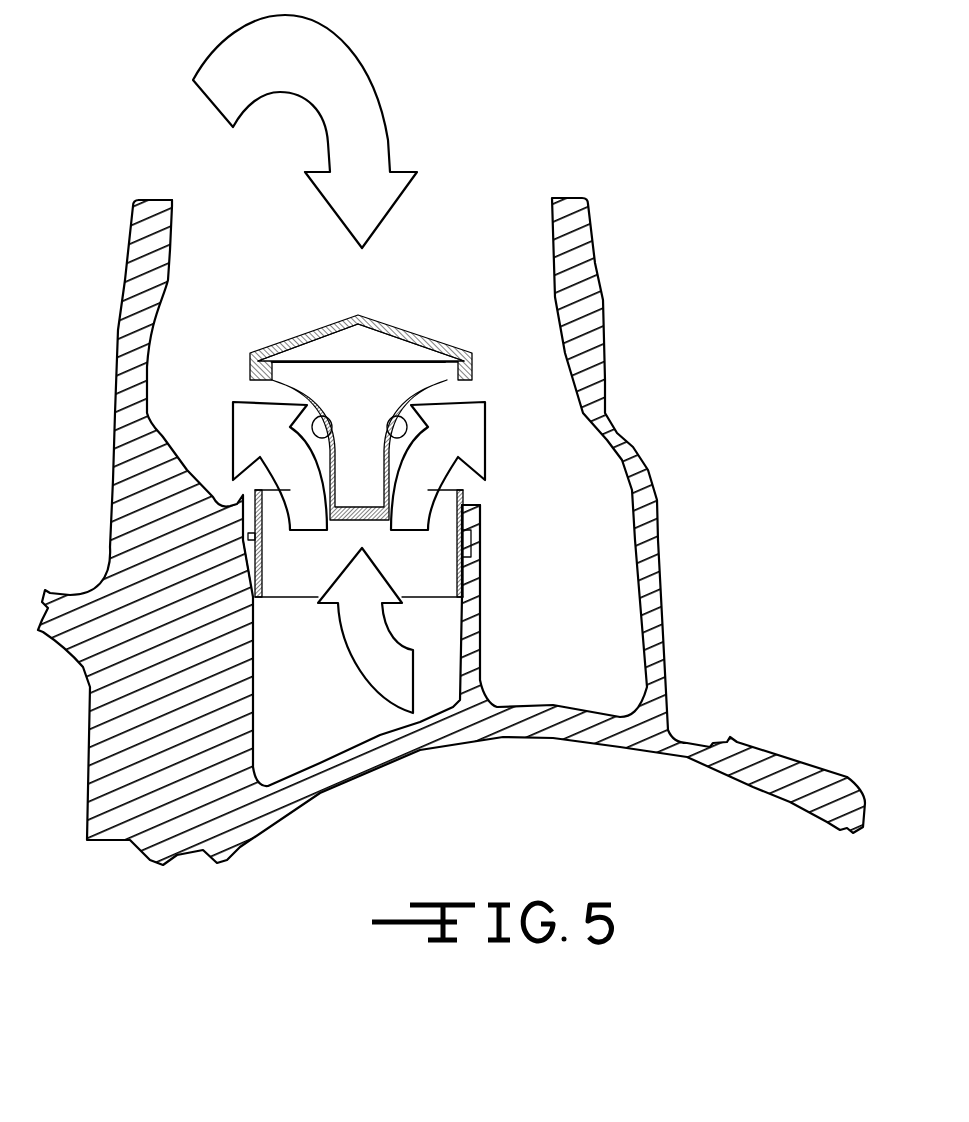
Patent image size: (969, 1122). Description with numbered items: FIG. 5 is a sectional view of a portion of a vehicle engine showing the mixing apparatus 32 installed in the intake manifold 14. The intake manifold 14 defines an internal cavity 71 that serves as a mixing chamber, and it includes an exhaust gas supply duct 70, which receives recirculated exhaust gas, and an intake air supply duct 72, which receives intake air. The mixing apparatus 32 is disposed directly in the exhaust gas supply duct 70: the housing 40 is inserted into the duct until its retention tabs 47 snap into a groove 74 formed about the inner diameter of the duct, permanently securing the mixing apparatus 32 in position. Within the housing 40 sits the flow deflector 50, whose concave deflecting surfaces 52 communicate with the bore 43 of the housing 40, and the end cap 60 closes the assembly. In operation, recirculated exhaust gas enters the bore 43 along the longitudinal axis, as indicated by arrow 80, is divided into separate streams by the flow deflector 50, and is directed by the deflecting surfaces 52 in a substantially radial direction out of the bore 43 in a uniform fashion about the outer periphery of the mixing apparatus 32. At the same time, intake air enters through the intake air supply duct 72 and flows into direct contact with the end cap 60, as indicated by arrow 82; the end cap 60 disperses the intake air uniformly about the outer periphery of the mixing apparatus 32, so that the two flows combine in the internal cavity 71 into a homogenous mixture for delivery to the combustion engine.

The intake manifold 14 is at (143, 255).
The intake air supply duct 72 is at (172, 217).
The internal cavity 71 is at (220, 282).
The arrow 82 is at (353, 108).
The end cap 60 is at (323, 327).
The mixing apparatus 32 is at (395, 308).
The flow deflector 50 is at (428, 372).
The deflecting surfaces 52 is at (388, 415).
The housing 40 is at (433, 558).
The bore 43 is at (430, 598).
The retention tabs 47 is at (250, 538).
The groove 74 is at (250, 555).
The exhaust gas supply duct 70 is at (466, 504).
The arrow 80 is at (345, 657).